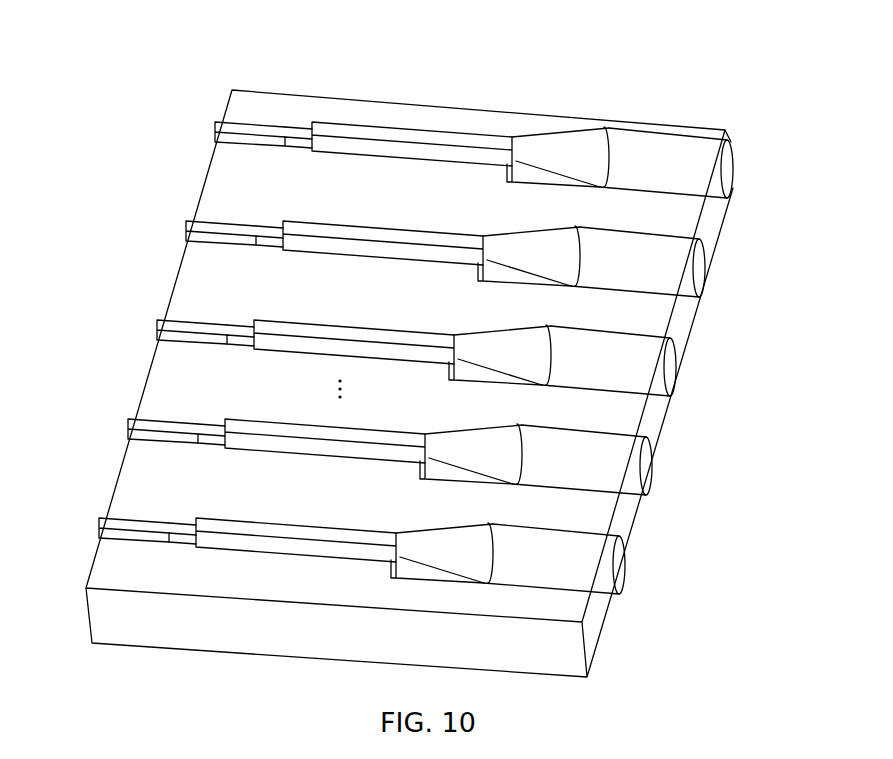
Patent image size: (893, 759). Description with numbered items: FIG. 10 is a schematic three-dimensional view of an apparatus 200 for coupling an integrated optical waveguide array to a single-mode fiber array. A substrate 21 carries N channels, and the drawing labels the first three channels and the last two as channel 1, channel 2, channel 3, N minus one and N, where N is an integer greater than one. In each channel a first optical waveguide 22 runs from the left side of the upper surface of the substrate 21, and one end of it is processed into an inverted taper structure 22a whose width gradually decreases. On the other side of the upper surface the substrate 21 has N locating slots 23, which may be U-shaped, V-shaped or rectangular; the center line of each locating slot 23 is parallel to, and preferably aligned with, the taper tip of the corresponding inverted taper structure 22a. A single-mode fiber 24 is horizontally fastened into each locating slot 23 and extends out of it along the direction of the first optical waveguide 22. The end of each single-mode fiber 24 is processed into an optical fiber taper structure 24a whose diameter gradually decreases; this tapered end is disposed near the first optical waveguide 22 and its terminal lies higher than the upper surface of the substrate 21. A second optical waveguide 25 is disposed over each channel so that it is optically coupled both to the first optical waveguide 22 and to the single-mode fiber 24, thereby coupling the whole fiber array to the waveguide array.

The apparatus for coupling an optical waveguide to a single-mode fiber 200 is at (257, 48).
The substrate 21 is at (420, 118).
The first optical waveguide 22 is at (240, 140).
The inverted taper structure 22a is at (298, 148).
The locating slot 23 is at (525, 177).
The single-mode fiber 24 is at (663, 147).
The optical fiber taper structure 24a is at (553, 148).
The second optical waveguide 25 is at (398, 147).
The channel 1 is at (489, 150).
The channel 2 is at (462, 259).
The channel 3 is at (431, 358).